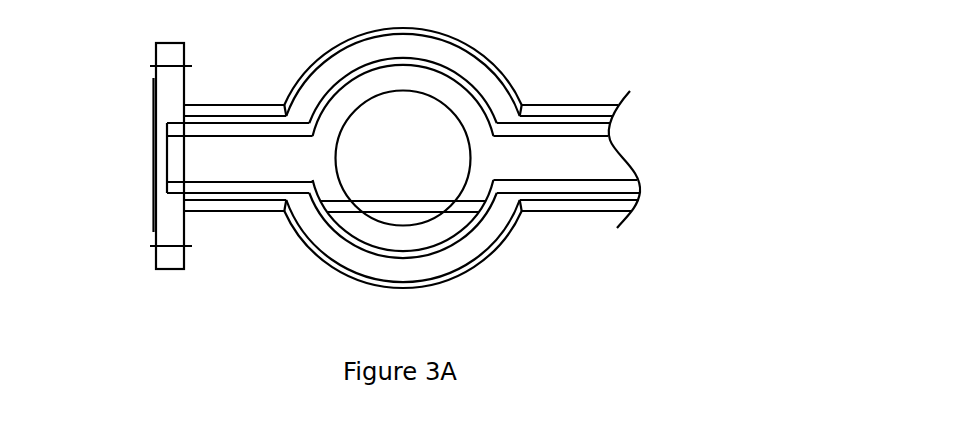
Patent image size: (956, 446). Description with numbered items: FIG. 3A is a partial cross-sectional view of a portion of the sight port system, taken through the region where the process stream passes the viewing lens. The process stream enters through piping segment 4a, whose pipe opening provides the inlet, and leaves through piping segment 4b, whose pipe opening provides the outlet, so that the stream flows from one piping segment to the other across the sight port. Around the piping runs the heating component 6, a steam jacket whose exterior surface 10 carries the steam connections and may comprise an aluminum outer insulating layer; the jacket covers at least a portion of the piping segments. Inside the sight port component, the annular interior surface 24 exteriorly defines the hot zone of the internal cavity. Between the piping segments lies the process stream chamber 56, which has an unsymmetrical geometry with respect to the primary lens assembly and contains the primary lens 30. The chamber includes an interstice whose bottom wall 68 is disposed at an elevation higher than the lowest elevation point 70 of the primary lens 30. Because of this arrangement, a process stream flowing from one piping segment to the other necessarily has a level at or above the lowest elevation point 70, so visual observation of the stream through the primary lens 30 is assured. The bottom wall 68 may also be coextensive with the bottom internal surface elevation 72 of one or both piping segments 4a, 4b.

The surface 10 is at (410, 27).
The heating component 6 is at (478, 72).
The annular interior surface 24 is at (345, 93).
The bottom wall 68 is at (483, 222).
The primary lens 30 is at (462, 120).
The lowest elevation point 70 is at (401, 223).
The piping segment 4a is at (248, 165).
The piping segment 4b is at (571, 145).
The bottom internal surface elevation 72 is at (195, 178).
The process stream chamber 56 is at (318, 173).